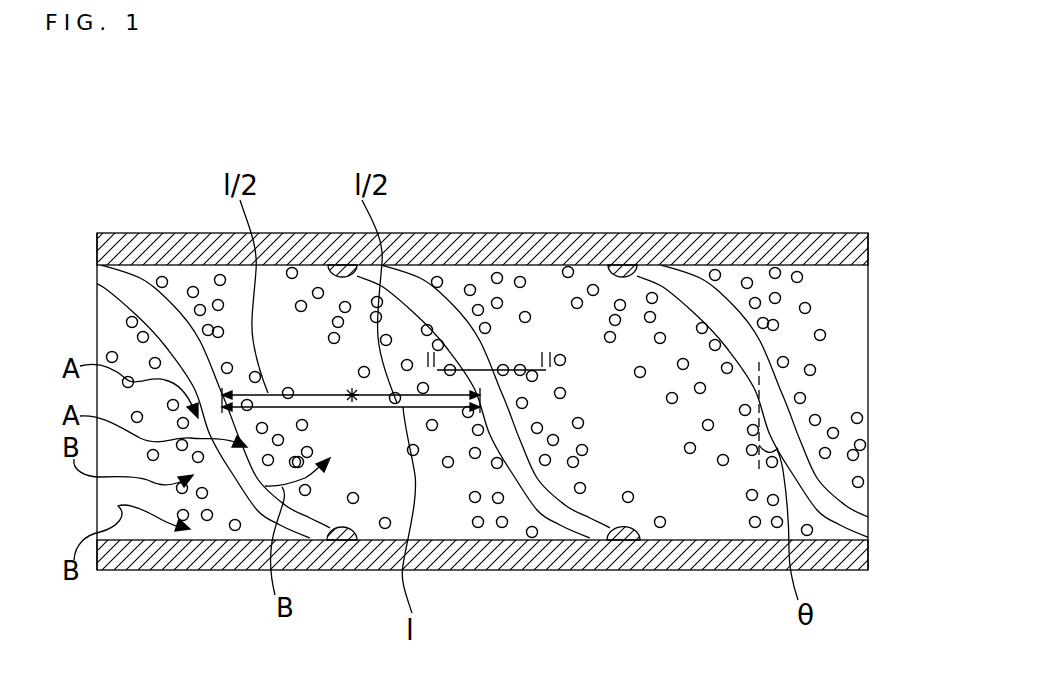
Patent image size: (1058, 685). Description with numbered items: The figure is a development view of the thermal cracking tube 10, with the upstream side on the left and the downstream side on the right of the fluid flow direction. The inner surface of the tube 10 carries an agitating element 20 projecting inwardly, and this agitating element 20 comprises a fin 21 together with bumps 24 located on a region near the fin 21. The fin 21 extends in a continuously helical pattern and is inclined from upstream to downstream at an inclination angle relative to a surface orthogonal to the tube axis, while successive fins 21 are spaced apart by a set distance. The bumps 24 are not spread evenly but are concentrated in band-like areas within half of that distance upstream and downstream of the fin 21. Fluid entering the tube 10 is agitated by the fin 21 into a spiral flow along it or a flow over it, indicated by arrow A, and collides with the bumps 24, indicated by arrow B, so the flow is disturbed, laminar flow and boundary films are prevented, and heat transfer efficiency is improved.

The thermal cracking tube 10 is at (846, 206).
The agitating element 20 is at (520, 357).
The fin 21 is at (680, 282).
The bumps 24 is at (805, 308).